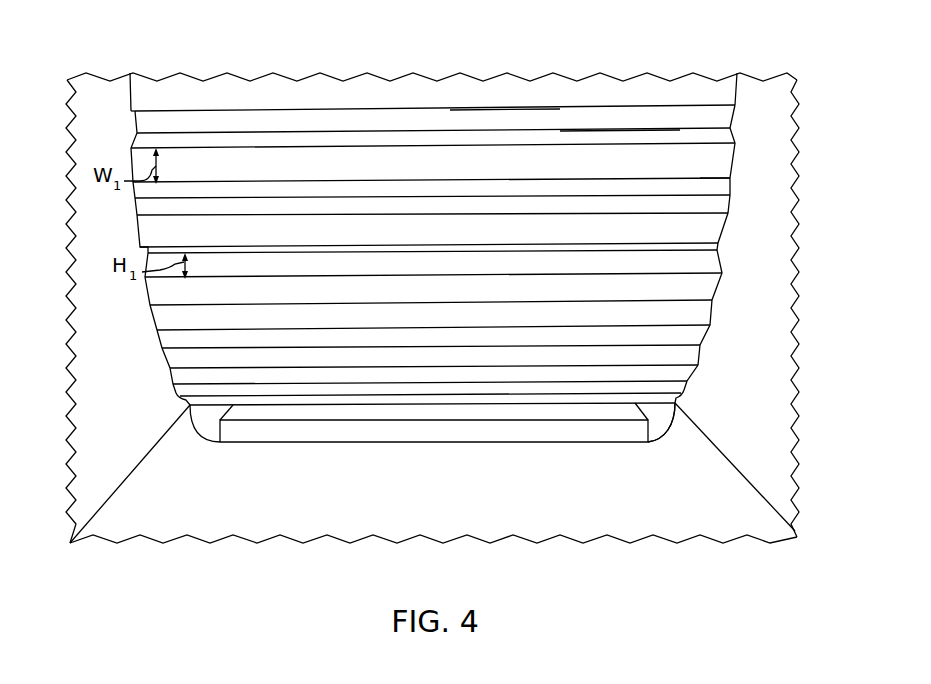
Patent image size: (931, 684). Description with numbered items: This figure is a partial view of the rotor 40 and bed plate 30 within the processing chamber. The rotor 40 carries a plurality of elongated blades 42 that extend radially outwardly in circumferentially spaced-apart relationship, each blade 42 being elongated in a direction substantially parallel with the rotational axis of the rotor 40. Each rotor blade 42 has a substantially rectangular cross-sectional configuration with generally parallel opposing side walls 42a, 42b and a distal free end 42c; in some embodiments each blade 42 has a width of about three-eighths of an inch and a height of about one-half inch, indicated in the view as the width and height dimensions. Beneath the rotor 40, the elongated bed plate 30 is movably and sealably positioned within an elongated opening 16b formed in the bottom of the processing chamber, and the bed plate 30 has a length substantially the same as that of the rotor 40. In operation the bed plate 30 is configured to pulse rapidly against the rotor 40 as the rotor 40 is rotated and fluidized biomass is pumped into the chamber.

The rotor 40 is at (432, 274).
The elongated blades 42 is at (209, 97).
The side wall 42a is at (522, 138).
The side wall 42b is at (705, 178).
The distal free end 42c is at (610, 158).
The bed plate 30 is at (603, 430).
The elongated opening 16b is at (662, 425).